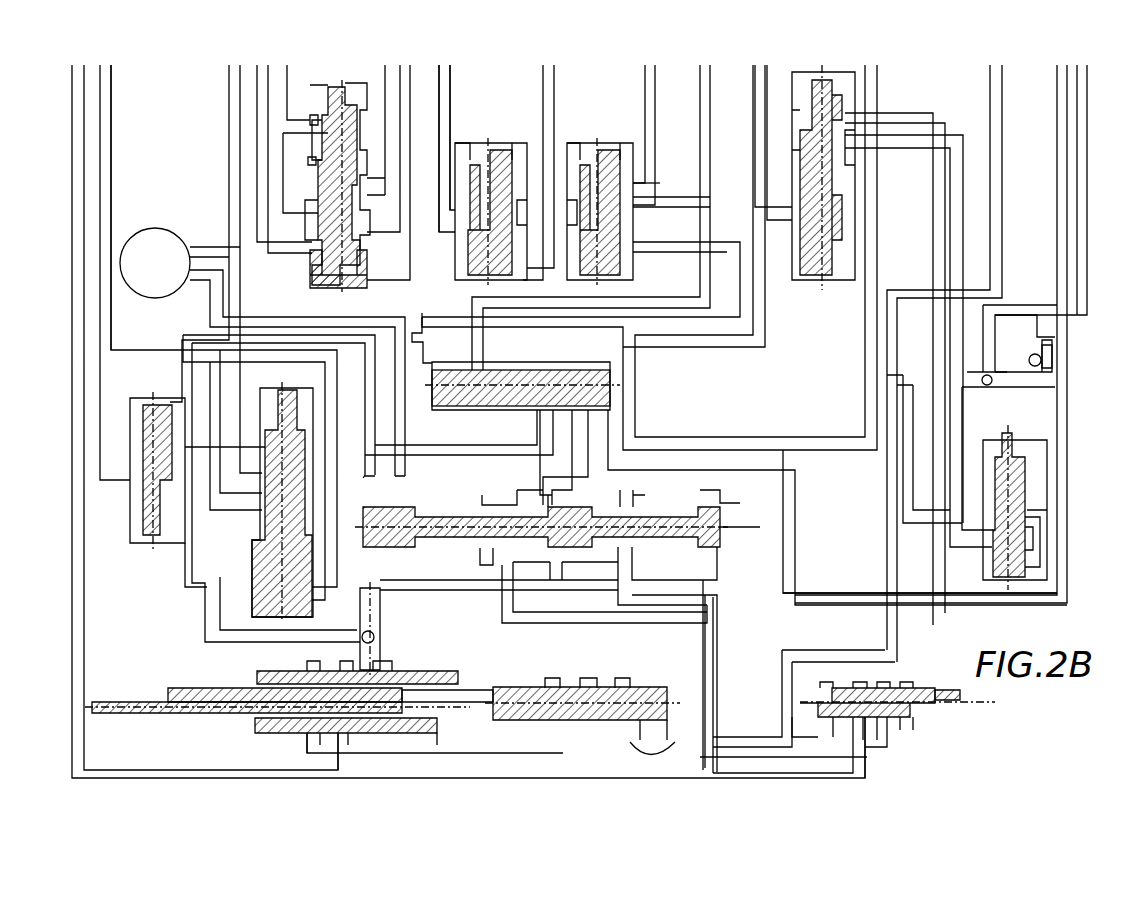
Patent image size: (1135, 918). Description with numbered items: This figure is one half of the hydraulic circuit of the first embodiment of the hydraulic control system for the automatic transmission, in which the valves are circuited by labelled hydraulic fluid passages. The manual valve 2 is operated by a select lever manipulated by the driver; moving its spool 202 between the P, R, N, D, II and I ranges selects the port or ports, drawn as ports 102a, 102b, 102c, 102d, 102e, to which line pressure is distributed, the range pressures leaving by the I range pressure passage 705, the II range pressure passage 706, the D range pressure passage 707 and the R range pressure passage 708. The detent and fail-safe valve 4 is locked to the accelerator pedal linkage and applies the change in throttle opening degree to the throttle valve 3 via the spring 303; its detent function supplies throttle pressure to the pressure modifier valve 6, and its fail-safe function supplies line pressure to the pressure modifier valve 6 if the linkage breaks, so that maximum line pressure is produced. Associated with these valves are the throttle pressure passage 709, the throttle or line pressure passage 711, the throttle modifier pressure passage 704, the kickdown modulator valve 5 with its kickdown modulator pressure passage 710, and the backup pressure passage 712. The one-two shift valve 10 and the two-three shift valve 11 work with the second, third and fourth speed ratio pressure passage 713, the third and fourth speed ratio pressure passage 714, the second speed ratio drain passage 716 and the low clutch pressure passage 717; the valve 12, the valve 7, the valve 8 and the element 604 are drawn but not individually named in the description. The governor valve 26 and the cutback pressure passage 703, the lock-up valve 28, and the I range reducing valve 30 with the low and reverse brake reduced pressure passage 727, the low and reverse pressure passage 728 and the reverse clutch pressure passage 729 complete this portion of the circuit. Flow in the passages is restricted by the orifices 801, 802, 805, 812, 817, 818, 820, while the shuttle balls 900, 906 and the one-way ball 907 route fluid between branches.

The manual valve 2 is at (449, 505).
The throttle valve 3 is at (590, 668).
The detent & fail-safe valve 4 is at (427, 663).
The kickdown modulator valve 5 is at (942, 675).
The pressure modifier valve 6 is at (148, 386).
The valve 7 is at (270, 371).
The valve 8 is at (440, 426).
The 1-2 shift valve 10 is at (890, 96).
The 2-3 shift valve 11 is at (606, 131).
The valve 12 is at (500, 131).
The governor valve 26 is at (168, 274).
The lock-up valve 28 is at (298, 266).
The I range reducing valve 30 is at (987, 433).
The port 102a is at (486, 558).
The port 102b is at (550, 496).
The port 102c is at (570, 554).
The port 102d is at (635, 497).
The port 102e is at (717, 552).
The spool 202 is at (728, 524).
The spring 303 is at (485, 689).
The passage 604 is at (693, 202).
The cutback pressure passage 703 is at (228, 209).
The throttle modifier pressure passage 704 is at (112, 327).
The I range pressure passage 705 is at (950, 114).
The II range pressure passage 706 is at (608, 460).
The D range pressure passage 707 is at (745, 434).
The R range pressure passage 708 is at (850, 592).
The throttle pressure passage 709 is at (780, 692).
The kickdown modulator pressure passage 710 is at (746, 737).
The throttle or line pressure passage 711 is at (203, 629).
The backup pressure passage 712 is at (473, 452).
The 2nd, 3rd, and 4th speed ratio pressure passage 713 is at (757, 185).
The 3rd and 4th speed ratio pressure passage 714 is at (705, 108).
The 2nd speed ratio drain passage 716 is at (661, 182).
The low clutch pressure passage 717 is at (451, 110).
The low & reverse brake reduced pressure passage 727 is at (913, 370).
The low & reverse pressure passage 728 is at (1089, 125).
The reverse clutch pressure passage 729 is at (1057, 160).
The orifice 801 is at (658, 730).
The orifice 802 is at (818, 742).
The orifice 805 is at (654, 248).
The orifice 812 is at (1065, 346).
The orifice 817 is at (310, 168).
The orifice 818 is at (312, 130).
The orifice 820 is at (1040, 540).
The shuttle ball 900 is at (381, 629).
The shuttle ball 906 is at (992, 386).
The one-way ball 907 is at (1027, 354).